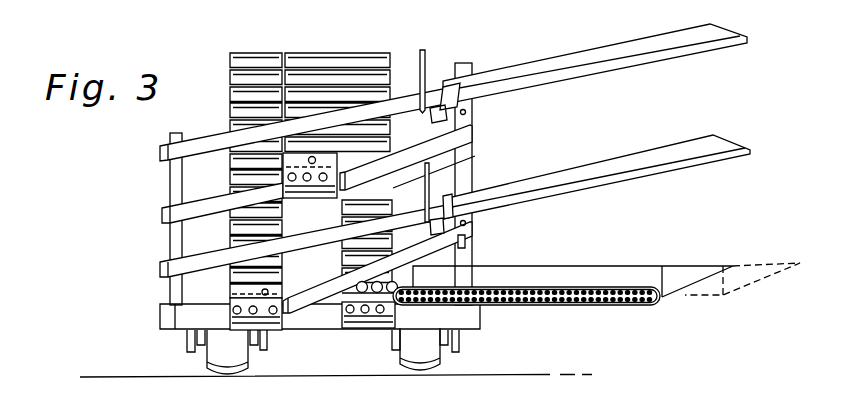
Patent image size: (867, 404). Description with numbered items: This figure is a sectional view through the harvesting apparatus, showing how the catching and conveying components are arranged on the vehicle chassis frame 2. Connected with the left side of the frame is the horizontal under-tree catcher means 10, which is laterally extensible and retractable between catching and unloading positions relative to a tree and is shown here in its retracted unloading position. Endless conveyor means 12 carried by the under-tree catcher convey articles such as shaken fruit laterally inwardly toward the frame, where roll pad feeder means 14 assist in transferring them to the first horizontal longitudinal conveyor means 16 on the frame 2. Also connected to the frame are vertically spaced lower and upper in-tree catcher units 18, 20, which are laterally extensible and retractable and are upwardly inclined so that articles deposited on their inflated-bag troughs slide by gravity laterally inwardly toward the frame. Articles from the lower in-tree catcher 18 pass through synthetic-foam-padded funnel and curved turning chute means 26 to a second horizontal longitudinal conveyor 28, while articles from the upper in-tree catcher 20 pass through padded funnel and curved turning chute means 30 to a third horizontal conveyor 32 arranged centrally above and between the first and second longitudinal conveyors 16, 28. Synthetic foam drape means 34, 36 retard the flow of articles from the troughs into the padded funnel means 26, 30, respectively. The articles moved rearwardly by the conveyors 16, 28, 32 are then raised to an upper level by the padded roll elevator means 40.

The vehicle chassis frame 2 is at (158, 321).
The under-tree catcher means 10 is at (647, 310).
The endless conveyor means 12 is at (540, 306).
The roll pad feeder means 14 is at (400, 278).
The first horizontal longitudinal conveyor means 16 is at (364, 328).
The lower in-tree catcher unit 18 is at (731, 168).
The upper in-tree catcher unit 20 is at (721, 56).
The padded funnel and curved turning chute means 26 is at (316, 285).
The second horizontal longitudinal conveyor 28 is at (278, 327).
The padded funnel and curved turning chute means 30 is at (388, 172).
The third horizontal conveyor 32 is at (297, 194).
The synthetic foam drape means 34 is at (440, 176).
The synthetic foam drape means 36 is at (428, 62).
The padded roll elevator means 40 is at (298, 48).